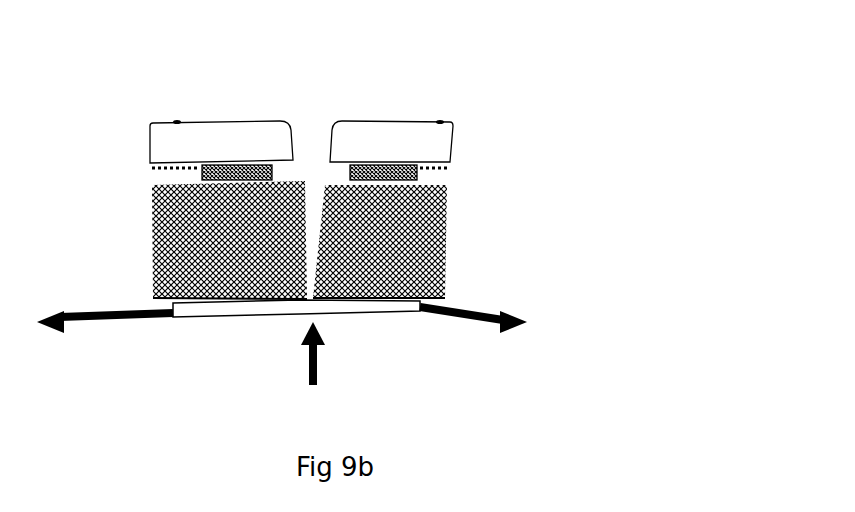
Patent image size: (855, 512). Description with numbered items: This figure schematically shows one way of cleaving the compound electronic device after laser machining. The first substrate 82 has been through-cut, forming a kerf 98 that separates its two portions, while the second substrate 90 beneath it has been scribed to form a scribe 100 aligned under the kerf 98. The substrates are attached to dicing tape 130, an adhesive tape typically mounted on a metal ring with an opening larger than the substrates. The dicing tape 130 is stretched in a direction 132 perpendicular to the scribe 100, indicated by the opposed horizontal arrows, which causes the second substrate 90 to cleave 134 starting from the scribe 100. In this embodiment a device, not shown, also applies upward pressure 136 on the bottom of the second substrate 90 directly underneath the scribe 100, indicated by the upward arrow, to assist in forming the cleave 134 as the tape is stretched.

The first substrate 82 is at (147, 153).
The kerf 98 is at (313, 135).
The second substrate 90 is at (148, 237).
The scribe 100 is at (313, 198).
The cleave 134 is at (313, 252).
The dicing tape 130 is at (385, 315).
The stretching direction 132 is at (80, 323).
The upward force arrow 136 is at (297, 352).